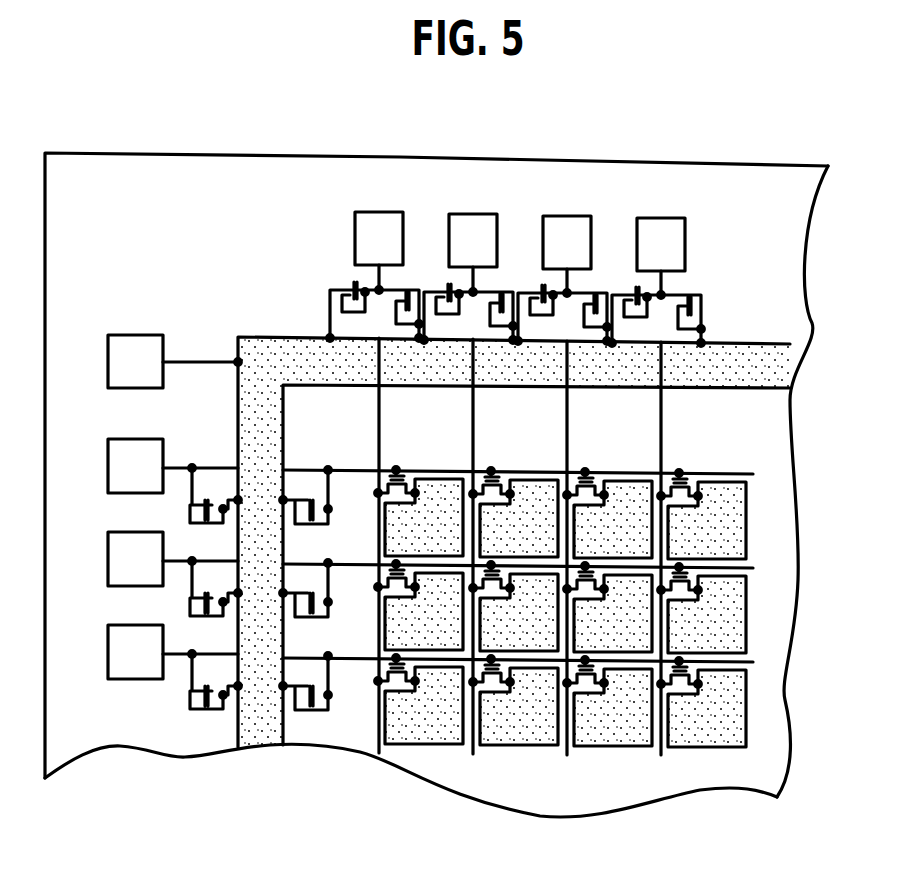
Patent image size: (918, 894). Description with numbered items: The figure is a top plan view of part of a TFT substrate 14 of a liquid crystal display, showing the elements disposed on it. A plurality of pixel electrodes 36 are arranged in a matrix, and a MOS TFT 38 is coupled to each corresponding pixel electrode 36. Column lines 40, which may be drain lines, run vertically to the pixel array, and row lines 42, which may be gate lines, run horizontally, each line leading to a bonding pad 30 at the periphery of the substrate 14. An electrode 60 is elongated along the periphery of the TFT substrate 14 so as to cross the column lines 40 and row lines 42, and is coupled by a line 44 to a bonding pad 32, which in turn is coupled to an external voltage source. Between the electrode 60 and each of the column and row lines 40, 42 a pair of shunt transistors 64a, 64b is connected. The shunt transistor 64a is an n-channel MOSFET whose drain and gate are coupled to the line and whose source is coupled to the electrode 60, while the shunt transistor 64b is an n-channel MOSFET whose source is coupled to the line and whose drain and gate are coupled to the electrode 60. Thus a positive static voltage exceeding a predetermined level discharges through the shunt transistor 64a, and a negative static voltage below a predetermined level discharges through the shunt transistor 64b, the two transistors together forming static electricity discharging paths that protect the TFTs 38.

The TFT substrate 14 is at (712, 180).
The bonding pads 30 is at (368, 232).
The bonding pad 32 is at (132, 348).
The pixel electrodes 36 is at (402, 622).
The MOS TFTs 38 is at (414, 465).
The column lines 40 is at (376, 283).
The row lines 42 is at (178, 463).
The line 44 is at (190, 361).
The electrode 60 is at (782, 370).
The shunt transistor 64a is at (316, 302).
The shunt transistor 64b is at (704, 296).